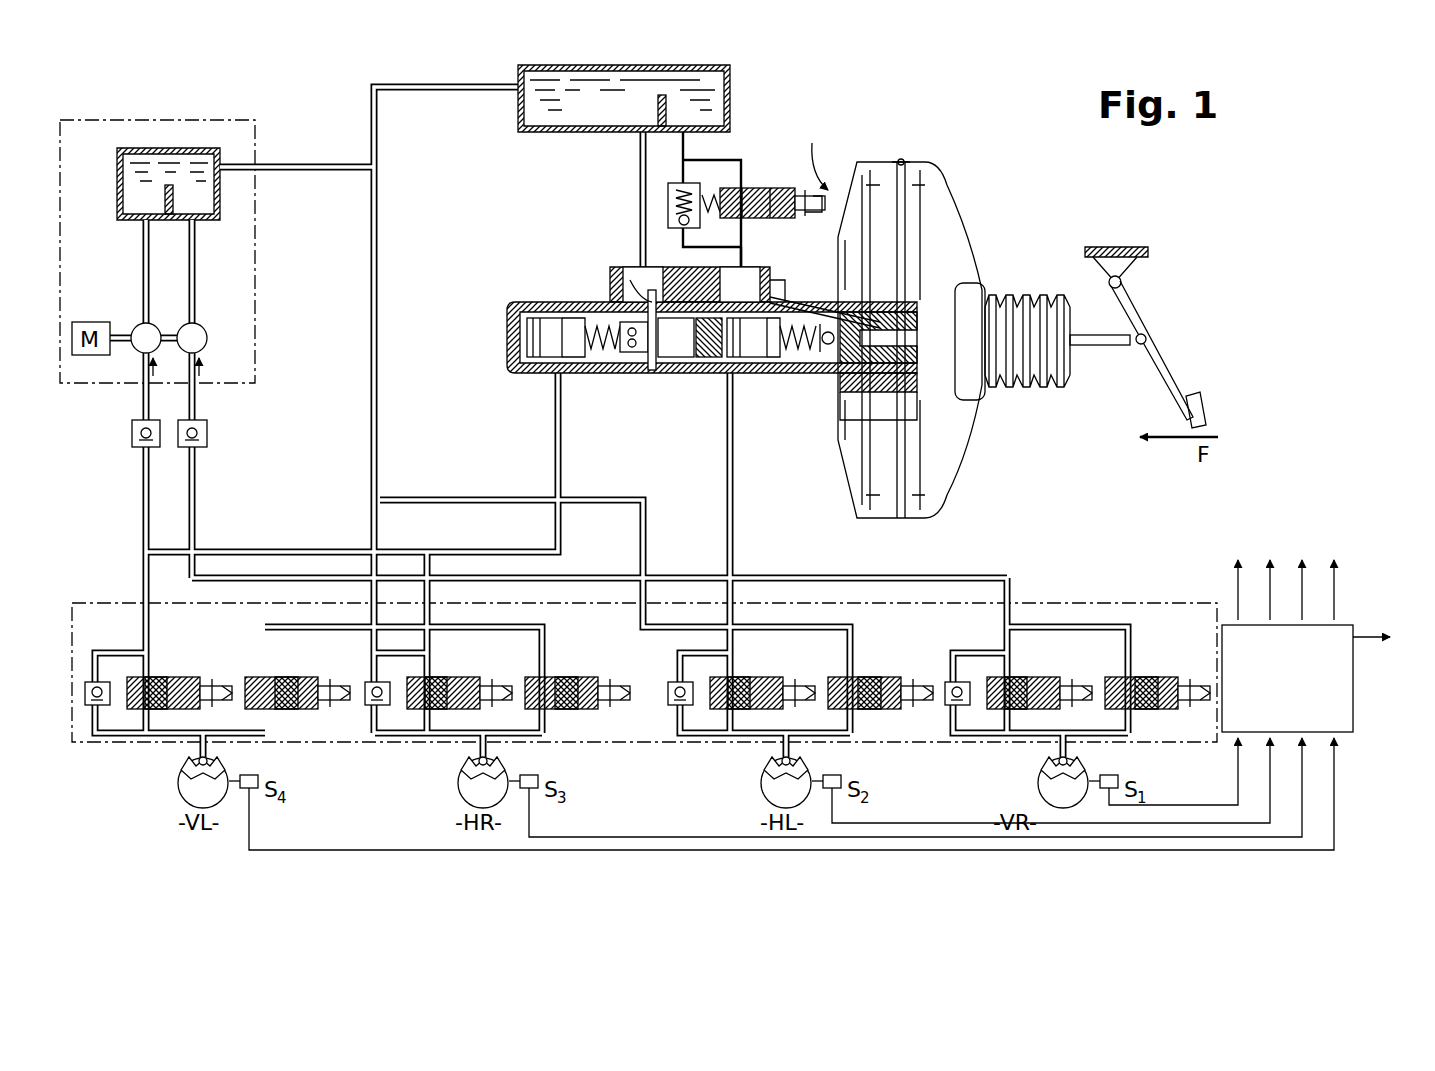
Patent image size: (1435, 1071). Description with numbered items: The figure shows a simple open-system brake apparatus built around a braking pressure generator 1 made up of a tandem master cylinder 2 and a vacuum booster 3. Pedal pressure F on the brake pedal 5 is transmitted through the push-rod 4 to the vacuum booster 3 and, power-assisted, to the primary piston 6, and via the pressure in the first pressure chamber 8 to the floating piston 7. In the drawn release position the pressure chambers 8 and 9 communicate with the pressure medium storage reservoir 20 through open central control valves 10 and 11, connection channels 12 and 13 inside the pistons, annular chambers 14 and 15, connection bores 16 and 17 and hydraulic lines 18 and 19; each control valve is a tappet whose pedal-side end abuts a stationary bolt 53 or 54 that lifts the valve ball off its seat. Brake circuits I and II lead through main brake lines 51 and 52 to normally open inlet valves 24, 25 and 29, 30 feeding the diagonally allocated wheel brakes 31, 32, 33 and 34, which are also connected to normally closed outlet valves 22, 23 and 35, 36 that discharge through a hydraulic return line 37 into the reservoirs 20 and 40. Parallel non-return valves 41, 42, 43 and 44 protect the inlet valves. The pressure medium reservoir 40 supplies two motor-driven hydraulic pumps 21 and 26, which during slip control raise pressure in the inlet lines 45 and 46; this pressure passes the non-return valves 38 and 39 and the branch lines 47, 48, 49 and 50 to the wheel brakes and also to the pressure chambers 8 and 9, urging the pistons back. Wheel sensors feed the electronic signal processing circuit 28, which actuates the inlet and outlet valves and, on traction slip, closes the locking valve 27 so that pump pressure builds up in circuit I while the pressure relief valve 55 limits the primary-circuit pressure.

The braking pressure generator 1 is at (820, 150).
The tandem master cylinder 2 is at (510, 302).
The vacuum booster 3 is at (928, 175).
The push-rod 4 is at (1108, 347).
The brake pedal 5 is at (1204, 408).
The primary piston 6 is at (880, 380).
The floating piston 7 is at (709, 357).
The first pressure chamber 8 is at (750, 357).
The pressure chamber 9 is at (588, 355).
The central control valve 10 is at (800, 357).
The central control valve 11 is at (614, 355).
The connection channel 12 is at (826, 348).
The connection channel 13 is at (634, 355).
The annular chamber 14 is at (846, 365).
The annular chamber 15 is at (676, 357).
The connection bore 16 is at (790, 300).
The connection bore 17 is at (648, 300).
The hydraulic line 18 is at (745, 262).
The hydraulic line 19 is at (640, 243).
The pressure medium storage reservoir 20 is at (735, 84).
The hydraulic pump 21 is at (133, 330).
The outlet valve 22 is at (1151, 677).
The outlet valve 23 is at (871, 677).
The inlet valve 24 is at (1021, 677).
The inlet valve 25 is at (752, 677).
The hydraulic pump 26 is at (200, 330).
The locking valve 27 is at (748, 188).
The electronic signal processing circuit 28 is at (1350, 625).
The inlet valve 29 is at (450, 677).
The inlet valve 30 is at (166, 677).
The wheel brake 31 is at (1043, 765).
The wheel brake 32 is at (766, 765).
The wheel brake 33 is at (463, 765).
The wheel brake 34 is at (183, 765).
The outlet valve 35 is at (568, 677).
The outlet valve 36 is at (285, 677).
The hydraulic return line 37 is at (378, 535).
The non-return valve 38 is at (209, 436).
The non-return valve 39 is at (130, 436).
The pressure medium reservoir 40 is at (117, 170).
The non-return valve 41 is at (944, 686).
The non-return valve 42 is at (667, 686).
The non-return valve 43 is at (364, 686).
The non-return valve 44 is at (84, 686).
The inlet line 45 is at (195, 503).
The inlet line 46 is at (143, 503).
The branch line 47 is at (1012, 598).
The branch line 48 is at (745, 583).
The branch line 49 is at (430, 565).
The branch line 50 is at (143, 595).
The main brake line 51 is at (763, 470).
The main brake line 52 is at (590, 470).
The stationary bolt 53 is at (895, 290).
The stationary bolt 54 is at (628, 280).
The pressure relief valve 55 is at (666, 196).